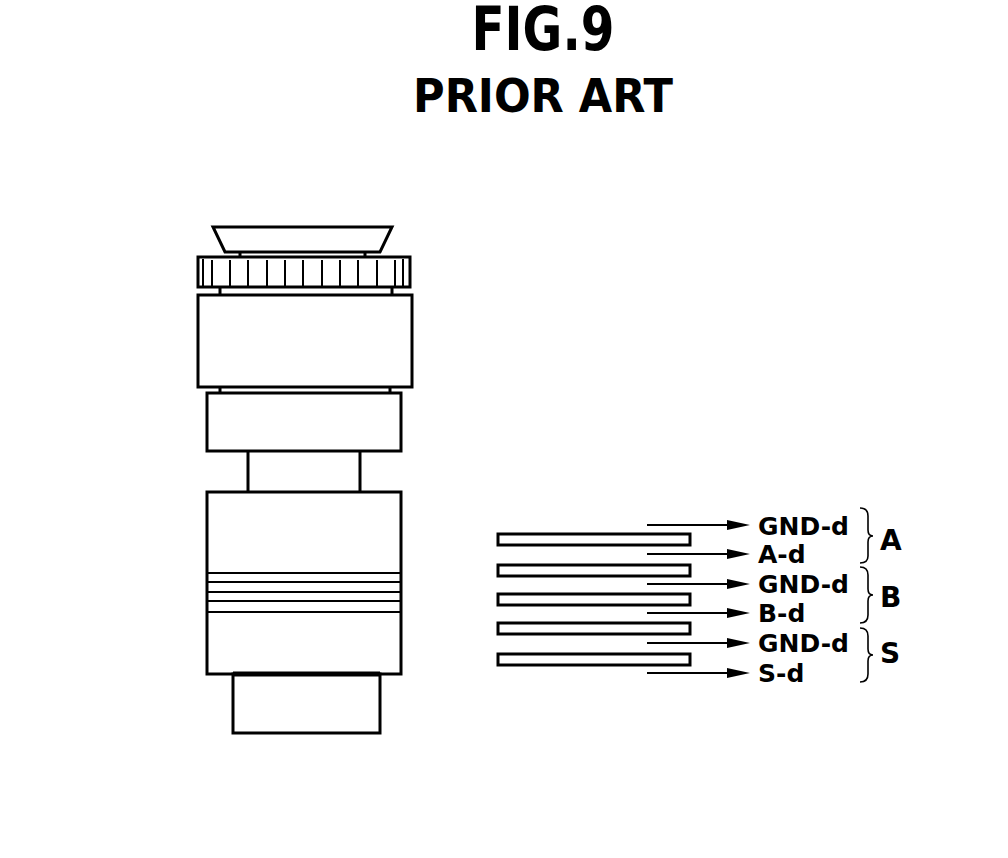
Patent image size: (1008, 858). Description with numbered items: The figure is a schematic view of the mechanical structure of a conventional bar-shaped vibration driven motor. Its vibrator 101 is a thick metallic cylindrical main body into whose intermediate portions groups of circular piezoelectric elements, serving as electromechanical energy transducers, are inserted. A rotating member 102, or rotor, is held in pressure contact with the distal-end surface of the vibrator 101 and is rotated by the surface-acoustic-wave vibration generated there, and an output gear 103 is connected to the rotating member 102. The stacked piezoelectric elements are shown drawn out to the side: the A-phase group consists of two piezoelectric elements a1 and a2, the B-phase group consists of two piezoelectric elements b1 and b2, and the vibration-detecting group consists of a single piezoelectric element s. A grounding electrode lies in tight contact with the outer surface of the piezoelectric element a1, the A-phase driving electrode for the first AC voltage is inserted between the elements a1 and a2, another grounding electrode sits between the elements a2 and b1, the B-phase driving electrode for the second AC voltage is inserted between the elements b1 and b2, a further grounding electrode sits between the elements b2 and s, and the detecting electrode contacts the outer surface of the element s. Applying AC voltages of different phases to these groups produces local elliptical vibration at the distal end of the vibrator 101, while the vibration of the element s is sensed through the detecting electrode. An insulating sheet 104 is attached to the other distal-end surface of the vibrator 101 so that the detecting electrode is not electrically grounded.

The vibrator 101 is at (106, 425).
The rotating member 102 is at (403, 335).
The output gear 103 is at (411, 273).
The insulating sheet 104 is at (381, 676).
The piezoelectric element a1 is at (413, 565).
The piezoelectric element a2 is at (577, 568).
The piezoelectric element b1 is at (577, 597).
The piezoelectric element b2 is at (577, 626).
The piezoelectric element s is at (415, 622).